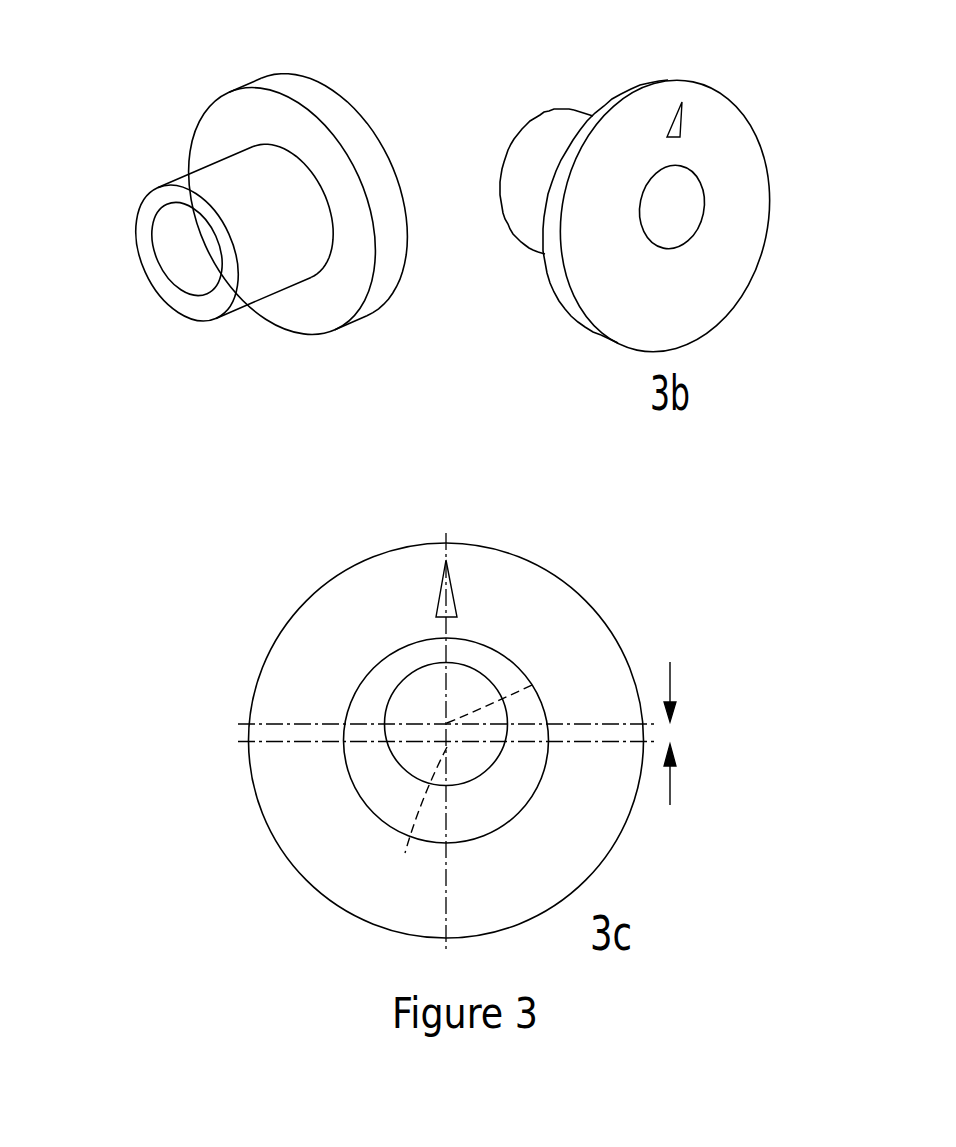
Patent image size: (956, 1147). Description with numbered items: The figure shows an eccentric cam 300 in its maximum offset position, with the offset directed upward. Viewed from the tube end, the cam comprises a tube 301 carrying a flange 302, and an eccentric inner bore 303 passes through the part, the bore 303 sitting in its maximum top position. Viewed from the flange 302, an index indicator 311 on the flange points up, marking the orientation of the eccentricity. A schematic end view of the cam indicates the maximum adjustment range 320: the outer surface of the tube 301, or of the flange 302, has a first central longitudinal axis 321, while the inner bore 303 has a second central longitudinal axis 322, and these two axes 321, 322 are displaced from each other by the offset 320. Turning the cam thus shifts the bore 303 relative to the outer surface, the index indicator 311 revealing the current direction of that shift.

The eccentric cam 300 is at (175, 93).
The tube 301 is at (157, 192).
The flange 302 is at (355, 135).
The eccentric inner bore 303 is at (162, 243).
The index indicator 311 is at (682, 103).
The maximum offset position 320 is at (670, 682).
The first central longitudinal axis 321 is at (419, 816).
The second central longitudinal axis 322 is at (533, 684).